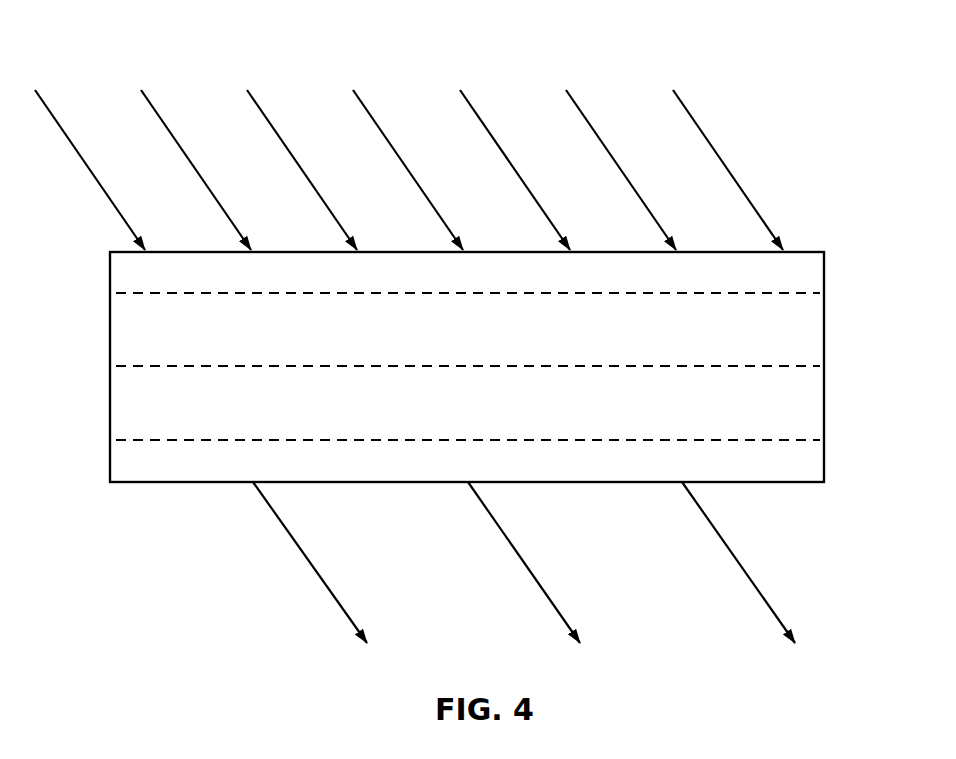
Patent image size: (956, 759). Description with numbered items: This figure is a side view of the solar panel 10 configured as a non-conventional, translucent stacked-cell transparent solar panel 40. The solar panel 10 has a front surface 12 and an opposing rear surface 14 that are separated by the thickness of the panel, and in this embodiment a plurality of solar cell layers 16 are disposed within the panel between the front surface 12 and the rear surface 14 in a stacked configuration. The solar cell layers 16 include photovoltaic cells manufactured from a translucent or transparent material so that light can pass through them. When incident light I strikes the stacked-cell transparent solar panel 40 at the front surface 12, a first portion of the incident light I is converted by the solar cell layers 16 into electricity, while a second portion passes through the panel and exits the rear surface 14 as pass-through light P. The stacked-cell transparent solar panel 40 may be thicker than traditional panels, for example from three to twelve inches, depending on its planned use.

The solar panel 10 is at (92, 52).
The stacked-cell transparent solar panel 40 is at (858, 292).
The front surface 12 is at (805, 251).
The rear surface 14 is at (770, 483).
The solar cell layer 16 is at (137, 296).
The incident light I is at (763, 108).
The pass-through light P is at (298, 582).